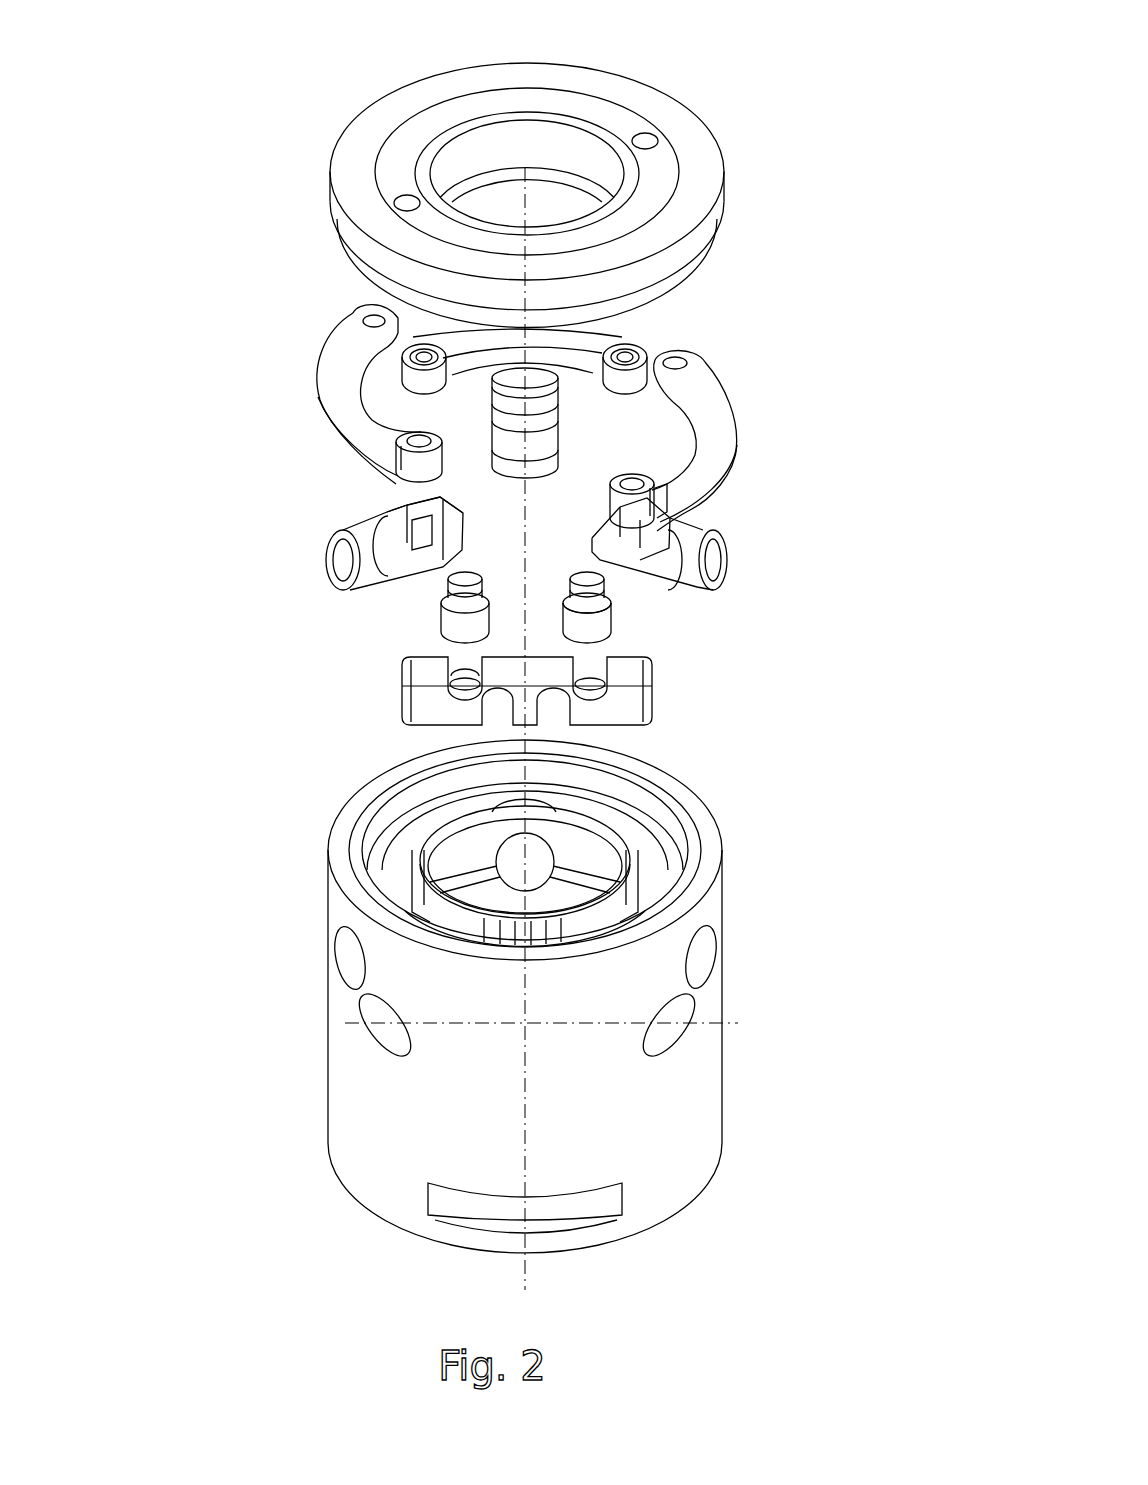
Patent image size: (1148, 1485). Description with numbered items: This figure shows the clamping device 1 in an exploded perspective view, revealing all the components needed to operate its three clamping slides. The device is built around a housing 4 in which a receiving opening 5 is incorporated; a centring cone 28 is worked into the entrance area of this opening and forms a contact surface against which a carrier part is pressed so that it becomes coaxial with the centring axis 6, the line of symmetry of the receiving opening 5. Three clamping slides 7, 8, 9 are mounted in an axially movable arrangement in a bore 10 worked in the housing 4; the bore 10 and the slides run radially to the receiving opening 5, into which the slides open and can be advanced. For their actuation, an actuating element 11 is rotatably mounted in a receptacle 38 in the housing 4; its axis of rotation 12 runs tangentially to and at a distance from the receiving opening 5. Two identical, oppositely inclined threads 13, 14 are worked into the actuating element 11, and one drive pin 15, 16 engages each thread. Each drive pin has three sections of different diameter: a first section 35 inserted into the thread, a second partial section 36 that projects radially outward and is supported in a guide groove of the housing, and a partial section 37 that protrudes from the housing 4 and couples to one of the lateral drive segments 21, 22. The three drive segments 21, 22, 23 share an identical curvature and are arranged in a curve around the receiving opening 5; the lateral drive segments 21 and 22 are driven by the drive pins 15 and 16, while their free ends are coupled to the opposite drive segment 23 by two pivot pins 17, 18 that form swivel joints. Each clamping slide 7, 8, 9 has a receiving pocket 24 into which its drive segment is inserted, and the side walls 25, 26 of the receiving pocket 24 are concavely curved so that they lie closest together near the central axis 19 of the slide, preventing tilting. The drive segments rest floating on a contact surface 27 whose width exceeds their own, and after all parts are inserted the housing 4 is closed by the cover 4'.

The clamping device 1 is at (823, 127).
The housing 4 is at (564, 996).
The cover 4' is at (561, 185).
The receiving opening 5 is at (458, 855).
The centring axis 6 is at (523, 1105).
The clamping slide 7 is at (445, 522).
The clamping slide 8 is at (713, 552).
The clamping slide 9 is at (543, 425).
The bore 10 is at (553, 855).
The actuating element 11 is at (433, 712).
The axis of rotation 12 is at (528, 693).
The thread 13 is at (453, 685).
The thread 14 is at (647, 693).
The drive pin 15 is at (443, 620).
The drive pin 16 is at (617, 614).
The pivot pin 17 is at (404, 355).
The pivot pin 18 is at (652, 361).
The central axis 19 is at (488, 392).
The drive segment 21 is at (350, 395).
The drive segment 22 is at (713, 423).
The drive segment 23 is at (592, 342).
The receiving pocket 24 is at (318, 565).
The side wall 25 is at (393, 520).
The side wall 26 is at (537, 405).
The contact surface 27 is at (392, 883).
The centring cone 28 is at (565, 140).
The first section 35 is at (453, 670).
The second partial section 36 is at (433, 607).
The partial section 37 is at (600, 593).
The receptacle 38 is at (663, 1037).